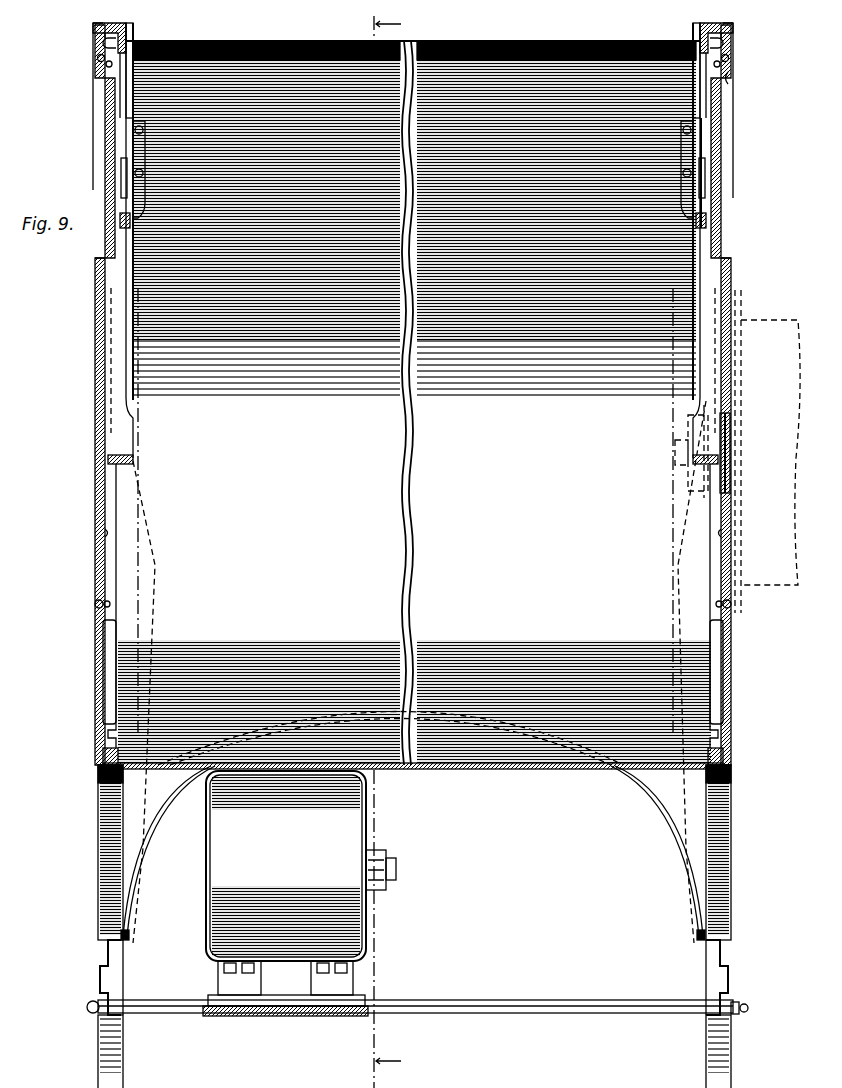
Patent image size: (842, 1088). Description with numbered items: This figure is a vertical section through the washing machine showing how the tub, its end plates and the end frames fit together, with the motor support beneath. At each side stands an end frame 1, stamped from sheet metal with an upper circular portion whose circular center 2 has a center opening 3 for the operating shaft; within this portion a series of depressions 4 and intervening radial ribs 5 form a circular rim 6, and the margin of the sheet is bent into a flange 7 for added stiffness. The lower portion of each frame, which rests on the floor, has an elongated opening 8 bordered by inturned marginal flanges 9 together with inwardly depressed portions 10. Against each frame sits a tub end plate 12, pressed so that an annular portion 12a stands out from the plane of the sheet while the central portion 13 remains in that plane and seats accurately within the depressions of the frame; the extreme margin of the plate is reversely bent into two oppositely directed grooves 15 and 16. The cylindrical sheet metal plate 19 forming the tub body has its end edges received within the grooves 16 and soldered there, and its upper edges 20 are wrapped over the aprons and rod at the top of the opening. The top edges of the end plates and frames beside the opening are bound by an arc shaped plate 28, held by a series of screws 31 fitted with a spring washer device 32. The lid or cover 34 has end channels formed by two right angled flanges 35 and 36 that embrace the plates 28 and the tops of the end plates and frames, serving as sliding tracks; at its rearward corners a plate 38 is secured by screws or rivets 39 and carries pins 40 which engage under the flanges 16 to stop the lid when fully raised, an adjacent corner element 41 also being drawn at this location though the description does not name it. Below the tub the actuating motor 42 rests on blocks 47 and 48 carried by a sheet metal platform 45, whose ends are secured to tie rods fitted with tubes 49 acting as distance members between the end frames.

The end frame 1 is at (90, 376).
The circular center 2 is at (90, 323).
The center opening 3 is at (722, 447).
The depressions 4 is at (100, 248).
The radial ribs 5 is at (90, 683).
The circular rim 6 is at (723, 70).
The flange 7 is at (147, 527).
The elongated opening 8 is at (100, 862).
The inturned marginal flanges 9 is at (722, 777).
The inwardly depressed portions 10 is at (750, 970).
The end plate 12 is at (95, 523).
The annular portion 12a is at (100, 657).
The central portion 13 is at (98, 490).
The groove 15 is at (96, 44).
The groove 16 is at (413, 30).
The cylindrical sheet metal plate 19 is at (414, 403).
The upper edges 20 is at (262, 185).
The arc shaped plate 28 is at (90, 29).
The screws 31 is at (92, 52).
The spring washer device 32 is at (100, 58).
The lid or cover 34 is at (512, 33).
The right angled flange 35 is at (122, 25).
The right angled flange 36 is at (85, 20).
The plate 38 is at (125, 185).
The screws or rivets 39 is at (127, 165).
The pins 40 is at (113, 217).
The strip 41 is at (113, 165).
The actuating motor 42 is at (301, 866).
The sheet metal platform 45 is at (287, 1008).
The block 47 is at (357, 992).
The block 48 is at (345, 977).
The tubes 49 is at (515, 1006).